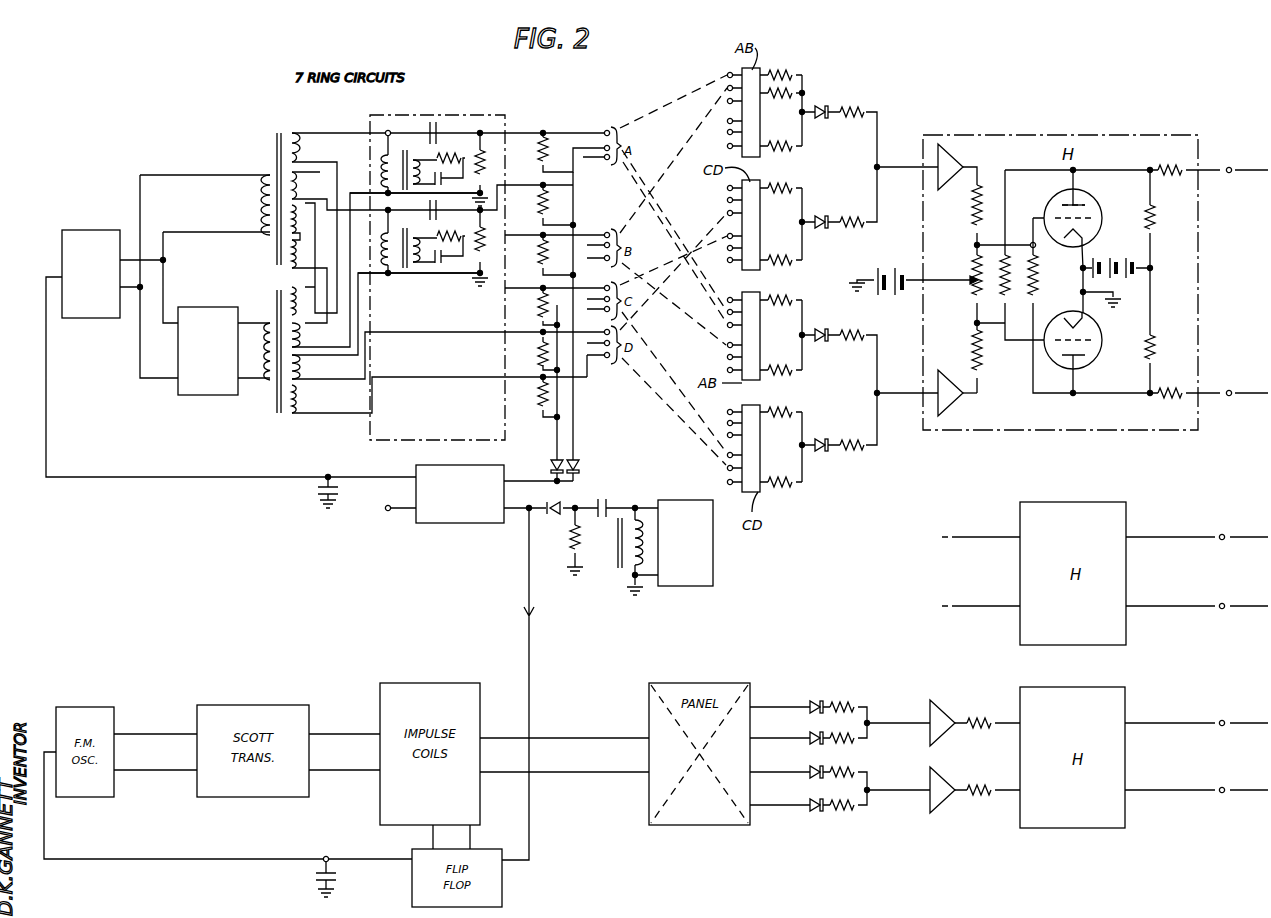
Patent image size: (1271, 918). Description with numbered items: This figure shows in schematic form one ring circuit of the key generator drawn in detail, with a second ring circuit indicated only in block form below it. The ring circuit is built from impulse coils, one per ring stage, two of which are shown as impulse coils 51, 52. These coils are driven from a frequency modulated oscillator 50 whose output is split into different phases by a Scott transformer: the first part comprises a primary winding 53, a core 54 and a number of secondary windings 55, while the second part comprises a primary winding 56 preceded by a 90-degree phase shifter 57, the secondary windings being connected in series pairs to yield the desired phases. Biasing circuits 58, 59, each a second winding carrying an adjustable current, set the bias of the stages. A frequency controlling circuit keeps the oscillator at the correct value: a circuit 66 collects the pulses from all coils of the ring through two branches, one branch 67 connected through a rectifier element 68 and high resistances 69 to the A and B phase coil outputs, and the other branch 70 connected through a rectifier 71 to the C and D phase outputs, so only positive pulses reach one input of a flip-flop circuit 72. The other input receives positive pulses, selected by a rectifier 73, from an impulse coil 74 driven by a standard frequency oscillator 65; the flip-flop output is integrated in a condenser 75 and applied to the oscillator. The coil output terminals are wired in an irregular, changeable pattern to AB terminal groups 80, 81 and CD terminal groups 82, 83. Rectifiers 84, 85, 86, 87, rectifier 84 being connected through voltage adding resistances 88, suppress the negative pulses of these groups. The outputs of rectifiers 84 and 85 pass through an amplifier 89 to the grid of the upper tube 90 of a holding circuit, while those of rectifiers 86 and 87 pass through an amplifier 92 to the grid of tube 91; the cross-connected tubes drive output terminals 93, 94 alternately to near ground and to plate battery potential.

The frequency modulated oscillator 50 is at (97, 238).
The impulse coil 51 is at (379, 153).
The impulse coil 52 is at (400, 263).
The primary winding 53 is at (251, 200).
The core 54 is at (274, 263).
The secondary windings 55 is at (321, 175).
The primary winding 56 is at (257, 370).
The 90-degree phase shifter 57 is at (188, 397).
The biasing circuit 58 is at (438, 163).
The biasing circuit 59 is at (430, 263).
The standard frequency oscillator 65 is at (683, 588).
The circuit 66 is at (537, 478).
The branch 67 is at (575, 408).
The rectifier element 68 is at (578, 465).
The high resistances 69 is at (551, 160).
The branch 70 is at (555, 435).
The rectifier 71 is at (562, 459).
The flip-flop circuit 72 is at (444, 524).
The rectifier 73 is at (547, 515).
The impulse coil 74 is at (622, 571).
The condenser 75 is at (318, 494).
The terminal group 80 is at (752, 118).
The terminal group 81 is at (752, 335).
The terminal group 82 is at (752, 222).
The terminal group 83 is at (748, 408).
The rectifier 84 is at (824, 108).
The rectifier 85 is at (822, 218).
The rectifier 86 is at (815, 327).
The rectifier 87 is at (820, 439).
The voltage adding resistances 88 is at (779, 75).
The amplifier 89 is at (946, 148).
The upper tube 90 is at (1052, 210).
The tube 91 is at (1092, 350).
The amplifier 92 is at (958, 404).
The output terminal 93 is at (1232, 166).
The output terminal 94 is at (1232, 390).